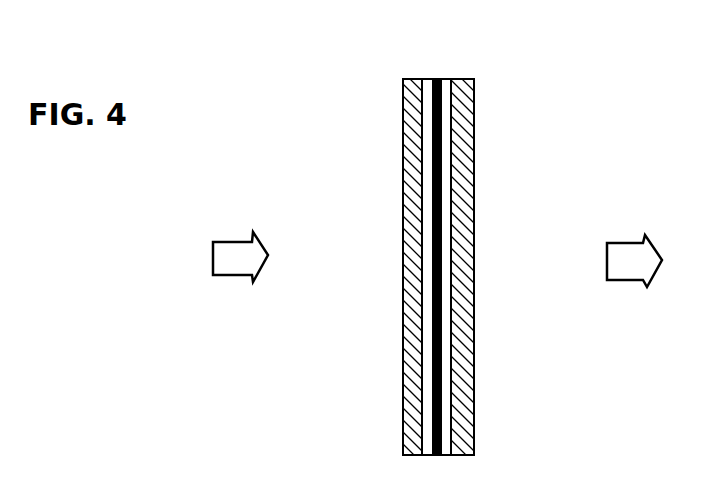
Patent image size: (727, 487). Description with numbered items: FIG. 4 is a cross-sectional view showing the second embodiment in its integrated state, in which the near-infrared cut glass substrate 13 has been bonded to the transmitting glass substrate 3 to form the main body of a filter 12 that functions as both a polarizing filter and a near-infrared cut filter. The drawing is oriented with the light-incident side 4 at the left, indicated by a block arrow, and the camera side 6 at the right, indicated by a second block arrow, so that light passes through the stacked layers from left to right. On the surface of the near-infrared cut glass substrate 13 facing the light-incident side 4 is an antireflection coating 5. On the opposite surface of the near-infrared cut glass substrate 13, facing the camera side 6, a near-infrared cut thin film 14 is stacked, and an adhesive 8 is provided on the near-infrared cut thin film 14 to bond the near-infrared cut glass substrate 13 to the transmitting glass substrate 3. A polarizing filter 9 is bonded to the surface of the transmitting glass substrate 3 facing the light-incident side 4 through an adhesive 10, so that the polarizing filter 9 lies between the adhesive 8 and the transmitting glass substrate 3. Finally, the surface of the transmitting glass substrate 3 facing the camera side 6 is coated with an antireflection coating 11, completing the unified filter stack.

The transmitting glass substrate 3 is at (468, 78).
The light-incident side 4 is at (228, 283).
The antireflection coating 5 is at (406, 376).
The camera side 6 is at (628, 287).
The adhesive 8 is at (426, 398).
The polarizing filter 9 is at (443, 360).
The adhesive 10 is at (440, 442).
The antireflection coating 11 is at (467, 417).
The main body of a filter 12 is at (441, 245).
The near-infrared cut glass substrate 13 is at (416, 104).
The near-infrared cut thin film 14 is at (417, 212).